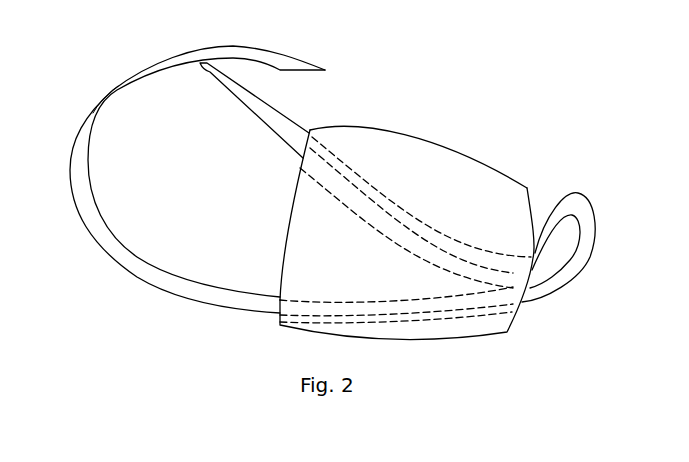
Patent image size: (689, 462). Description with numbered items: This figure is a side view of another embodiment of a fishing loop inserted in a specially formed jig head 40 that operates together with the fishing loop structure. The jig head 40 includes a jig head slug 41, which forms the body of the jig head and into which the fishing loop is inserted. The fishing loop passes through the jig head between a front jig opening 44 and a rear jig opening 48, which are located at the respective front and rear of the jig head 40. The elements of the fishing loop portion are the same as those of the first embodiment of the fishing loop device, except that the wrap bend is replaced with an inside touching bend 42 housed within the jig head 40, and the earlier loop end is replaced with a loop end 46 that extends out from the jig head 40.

The jig head 40 is at (379, 201).
The jig head slug 41 is at (380, 125).
The inside touching bend 42 is at (518, 273).
The front jig opening 44 is at (522, 302).
The loop end 46 is at (212, 70).
The rear jig opening 48 is at (288, 215).